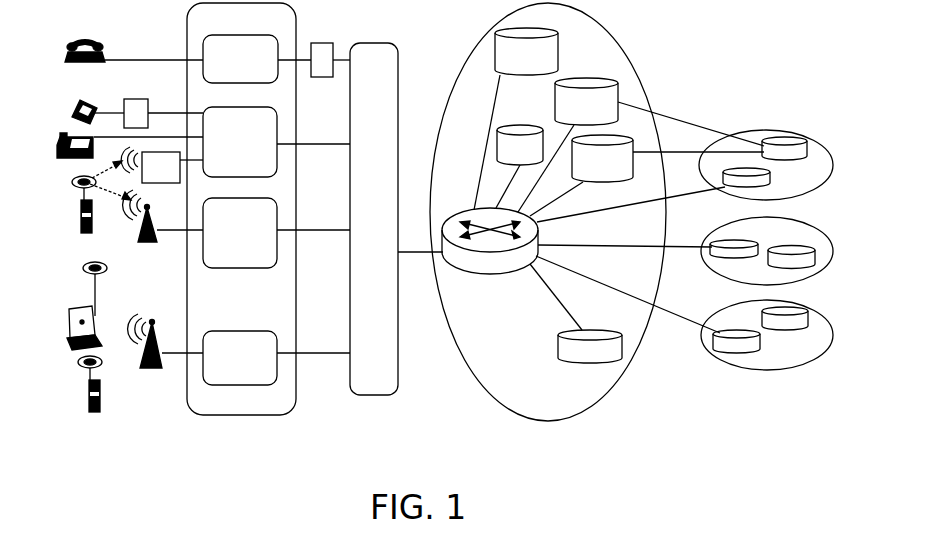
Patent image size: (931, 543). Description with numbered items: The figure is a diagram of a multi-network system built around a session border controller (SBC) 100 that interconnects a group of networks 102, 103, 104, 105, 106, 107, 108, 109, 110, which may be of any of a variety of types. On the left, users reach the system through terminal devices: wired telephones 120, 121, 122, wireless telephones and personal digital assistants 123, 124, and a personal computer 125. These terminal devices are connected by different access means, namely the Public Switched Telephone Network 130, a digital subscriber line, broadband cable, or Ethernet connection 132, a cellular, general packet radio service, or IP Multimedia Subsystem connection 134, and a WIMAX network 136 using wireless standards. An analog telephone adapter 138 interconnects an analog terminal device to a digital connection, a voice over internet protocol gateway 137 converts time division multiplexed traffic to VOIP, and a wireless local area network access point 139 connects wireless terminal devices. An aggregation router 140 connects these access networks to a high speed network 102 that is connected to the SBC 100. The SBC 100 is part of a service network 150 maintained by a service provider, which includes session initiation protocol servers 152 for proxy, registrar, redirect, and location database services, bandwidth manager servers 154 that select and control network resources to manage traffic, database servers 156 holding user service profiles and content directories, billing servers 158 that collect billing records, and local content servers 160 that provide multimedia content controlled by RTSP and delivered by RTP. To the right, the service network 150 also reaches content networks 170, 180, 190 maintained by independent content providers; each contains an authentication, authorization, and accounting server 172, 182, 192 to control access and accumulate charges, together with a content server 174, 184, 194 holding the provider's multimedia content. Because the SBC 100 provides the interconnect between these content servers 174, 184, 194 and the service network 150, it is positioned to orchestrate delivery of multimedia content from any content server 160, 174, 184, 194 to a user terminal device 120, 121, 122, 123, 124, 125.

The session border controller 100 is at (500, 275).
The high speed network 102 is at (418, 252).
The network 103 is at (487, 130).
The network 104 is at (478, 205).
The network 105 is at (557, 138).
The network 106 is at (560, 198).
The network 107 is at (658, 207).
The network 108 is at (615, 245).
The network 109 is at (637, 290).
The network 110 is at (566, 307).
The wired telephone 120 is at (88, 42).
The wired telephone 121 is at (88, 100).
The wired telephone 122 is at (68, 135).
The wireless telephone or personal digital assistant 123 is at (83, 225).
The wireless telephone or personal digital assistant 124 is at (90, 405).
The personal computer 125 is at (78, 310).
The Public Switched Telephone Network 130 is at (250, 35).
The DSL, broadband cable, Ethernet network 132 is at (250, 107).
The cellular, GPRS, IMS network 134 is at (252, 198).
The WIMAX network 136 is at (252, 331).
The voice over internet protocol gateway 137 is at (322, 43).
The analog telephone adapter 138 is at (138, 99).
The wireless local area network access point 139 is at (176, 177).
The aggregation router 140 is at (375, 43).
The service network 150 is at (612, 33).
The session initiation protocol server 152 is at (541, 64).
The bandwidth manager server 154 is at (507, 156).
The database server 156 is at (601, 114).
The billing server 158 is at (617, 170).
The local content server 160 is at (605, 359).
The content network 170 is at (797, 133).
The authentication, authorization, and accounting server 172 is at (781, 160).
The content server 174 is at (750, 188).
The content network 180 is at (797, 219).
The authentication, authorization, and accounting server 182 is at (800, 246).
The content server 184 is at (740, 259).
The content network 190 is at (797, 304).
The authentication, authorization, and accounting server 192 is at (780, 330).
The content server 194 is at (745, 354).